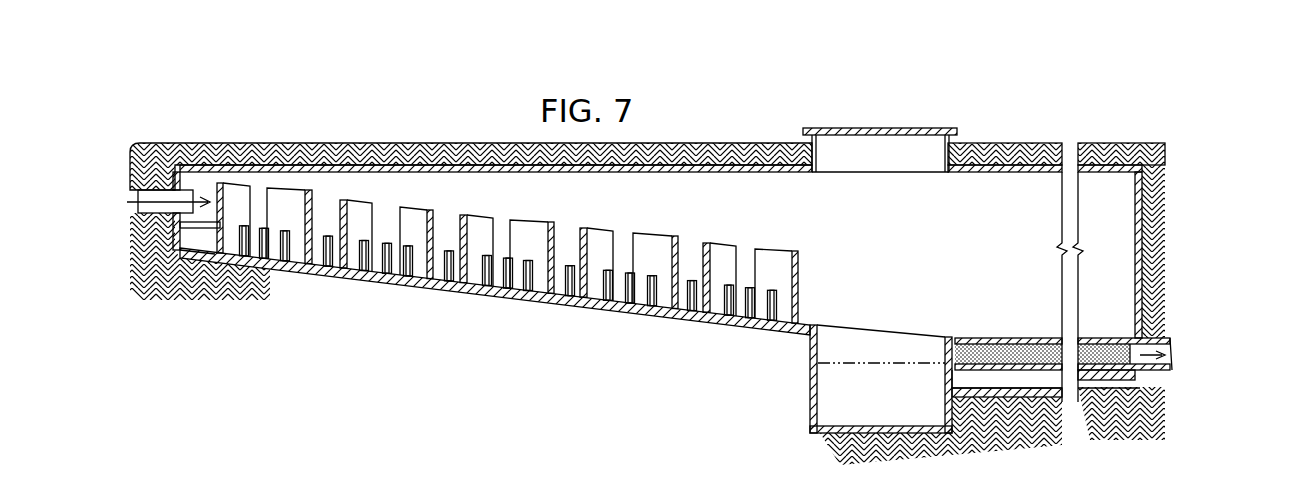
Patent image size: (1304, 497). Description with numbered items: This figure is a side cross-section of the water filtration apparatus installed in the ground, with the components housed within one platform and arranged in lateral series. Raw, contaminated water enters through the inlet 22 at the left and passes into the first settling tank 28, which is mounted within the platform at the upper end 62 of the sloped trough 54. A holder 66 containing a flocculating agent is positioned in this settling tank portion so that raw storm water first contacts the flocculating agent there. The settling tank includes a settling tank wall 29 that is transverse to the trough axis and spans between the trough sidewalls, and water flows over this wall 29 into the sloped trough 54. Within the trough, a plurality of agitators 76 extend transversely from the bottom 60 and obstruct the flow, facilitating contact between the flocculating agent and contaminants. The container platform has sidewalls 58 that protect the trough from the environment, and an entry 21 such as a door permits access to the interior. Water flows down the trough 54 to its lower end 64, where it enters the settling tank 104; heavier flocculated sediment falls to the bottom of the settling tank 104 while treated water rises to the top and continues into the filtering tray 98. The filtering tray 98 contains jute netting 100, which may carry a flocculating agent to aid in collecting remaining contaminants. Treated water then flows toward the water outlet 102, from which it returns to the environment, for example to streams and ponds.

The entry 21 is at (905, 153).
The water inlet 22 is at (137, 143).
The first settling tank 28 is at (184, 178).
The settling tank wall 29 is at (187, 240).
The sloped trough 54 is at (173, 305).
The sidewalls 58 is at (308, 194).
The bottom 60 is at (428, 286).
The upper end 62 is at (210, 180).
The lower end 64 is at (787, 331).
The holder 66 is at (213, 258).
The agitators 76 is at (325, 262).
The filtering tray 98 is at (1035, 372).
The jute netting 100 is at (1107, 338).
The water outlet 102 is at (1172, 352).
The settling tank 104 is at (935, 412).